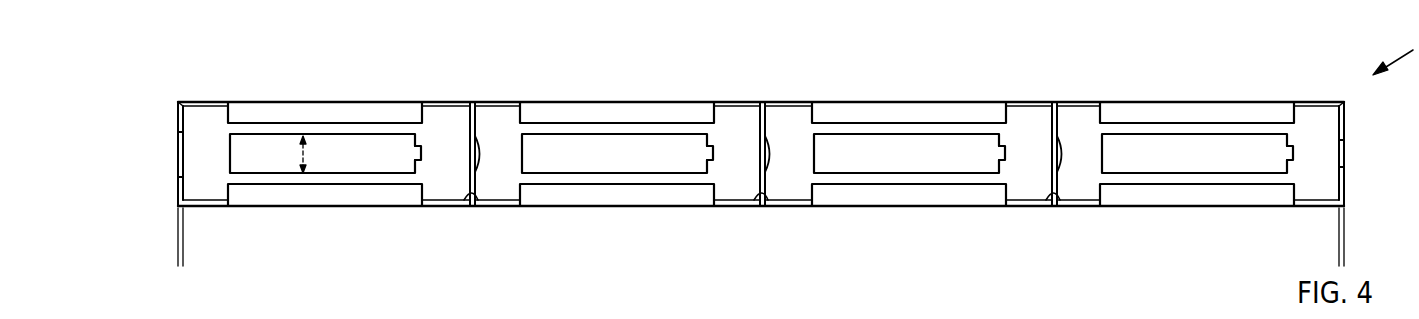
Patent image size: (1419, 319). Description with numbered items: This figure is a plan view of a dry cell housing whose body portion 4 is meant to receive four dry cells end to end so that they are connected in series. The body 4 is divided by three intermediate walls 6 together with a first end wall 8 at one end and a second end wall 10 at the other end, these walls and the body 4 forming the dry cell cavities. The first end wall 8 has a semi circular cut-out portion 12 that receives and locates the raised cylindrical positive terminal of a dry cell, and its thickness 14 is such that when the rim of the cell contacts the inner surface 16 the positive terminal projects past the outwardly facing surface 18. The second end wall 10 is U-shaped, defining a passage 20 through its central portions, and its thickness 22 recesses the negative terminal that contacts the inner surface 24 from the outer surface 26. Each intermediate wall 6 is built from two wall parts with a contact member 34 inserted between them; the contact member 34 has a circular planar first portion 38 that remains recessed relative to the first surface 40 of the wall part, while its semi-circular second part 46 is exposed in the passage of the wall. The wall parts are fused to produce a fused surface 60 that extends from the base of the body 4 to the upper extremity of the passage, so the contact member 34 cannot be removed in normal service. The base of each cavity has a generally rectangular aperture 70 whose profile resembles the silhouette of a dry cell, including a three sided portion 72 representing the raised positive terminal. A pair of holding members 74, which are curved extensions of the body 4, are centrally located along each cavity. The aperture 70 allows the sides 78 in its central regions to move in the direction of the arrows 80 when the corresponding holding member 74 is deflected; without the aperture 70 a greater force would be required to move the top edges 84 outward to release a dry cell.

The body portion 4 is at (201, 102).
The intermediate wall 6 is at (475, 118).
The first end wall 8 is at (1345, 113).
The second end wall 10 is at (178, 114).
The semi circular cut-out portion 12 is at (1345, 150).
The thickness 14 is at (1307, 255).
The inner surface 16 is at (1337, 117).
The outwardly facing surface 18 is at (1345, 188).
The passage 20 is at (178, 153).
The thickness 22 is at (215, 257).
The inner surface 24 is at (190, 112).
The outer surface 26 is at (178, 187).
The contact member 34 is at (468, 137).
The first portion 38 is at (467, 167).
The first surface 40 is at (465, 197).
The second part 46 is at (482, 138).
The fused surface 60 is at (476, 124).
The aperture 70 is at (345, 136).
The three sided portion 72 is at (423, 153).
The holding member 74 is at (291, 110).
The sides 78 is at (245, 135).
The arrows 80 is at (306, 142).
The top edges 84 is at (258, 133).